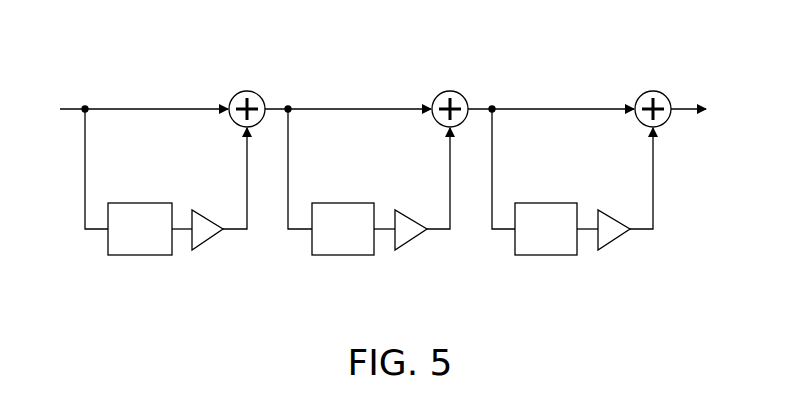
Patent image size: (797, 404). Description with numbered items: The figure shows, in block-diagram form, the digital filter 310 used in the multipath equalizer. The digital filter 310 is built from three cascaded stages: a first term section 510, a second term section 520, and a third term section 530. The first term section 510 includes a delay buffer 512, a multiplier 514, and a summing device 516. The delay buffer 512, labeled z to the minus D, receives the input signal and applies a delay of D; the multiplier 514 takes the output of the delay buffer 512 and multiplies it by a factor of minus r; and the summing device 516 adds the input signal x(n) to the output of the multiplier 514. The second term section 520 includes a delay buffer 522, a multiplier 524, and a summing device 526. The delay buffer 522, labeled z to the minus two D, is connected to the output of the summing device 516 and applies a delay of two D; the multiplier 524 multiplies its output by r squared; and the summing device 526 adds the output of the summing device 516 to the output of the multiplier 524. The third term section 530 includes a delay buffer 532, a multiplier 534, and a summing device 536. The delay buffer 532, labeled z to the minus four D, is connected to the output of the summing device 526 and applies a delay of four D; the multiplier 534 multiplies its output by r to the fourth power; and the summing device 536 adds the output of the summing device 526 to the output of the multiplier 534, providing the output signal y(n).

The digital filter 310 is at (266, 322).
The first term section 510 is at (157, 73).
The delay buffer 512 is at (138, 203).
The multiplier 514 is at (215, 240).
The summing device 516 is at (258, 94).
The second term section 520 is at (359, 73).
The delay buffer 522 is at (342, 203).
The multiplier 524 is at (419, 240).
The summing device 526 is at (461, 94).
The third term section 530 is at (560, 73).
The delay buffer 532 is at (545, 203).
The multiplier 534 is at (622, 240).
The summing device 536 is at (664, 94).